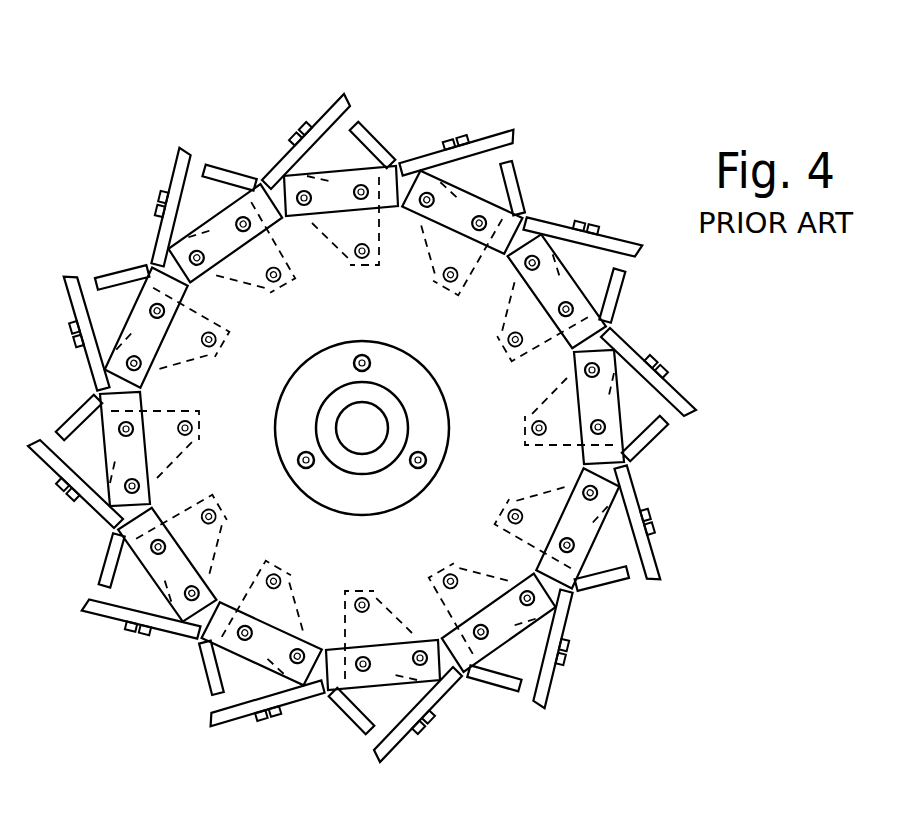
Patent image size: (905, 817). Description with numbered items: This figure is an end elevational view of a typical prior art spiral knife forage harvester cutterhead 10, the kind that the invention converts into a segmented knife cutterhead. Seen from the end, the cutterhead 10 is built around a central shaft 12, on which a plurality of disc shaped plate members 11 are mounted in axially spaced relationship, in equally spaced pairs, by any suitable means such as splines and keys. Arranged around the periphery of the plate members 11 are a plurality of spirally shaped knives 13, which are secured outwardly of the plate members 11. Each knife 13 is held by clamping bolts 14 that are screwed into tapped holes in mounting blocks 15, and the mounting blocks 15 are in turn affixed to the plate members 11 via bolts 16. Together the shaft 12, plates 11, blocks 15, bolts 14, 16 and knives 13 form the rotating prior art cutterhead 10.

The prior art spiral knife cutterhead 10 is at (153, 101).
The disc shaped plate members 11 is at (443, 339).
The central shaft 12 is at (358, 410).
The spirally shaped knives 13 is at (180, 146).
The clamping bolts 14 is at (155, 205).
The mounting blocks 15 is at (522, 148).
The bolts 16 is at (362, 260).